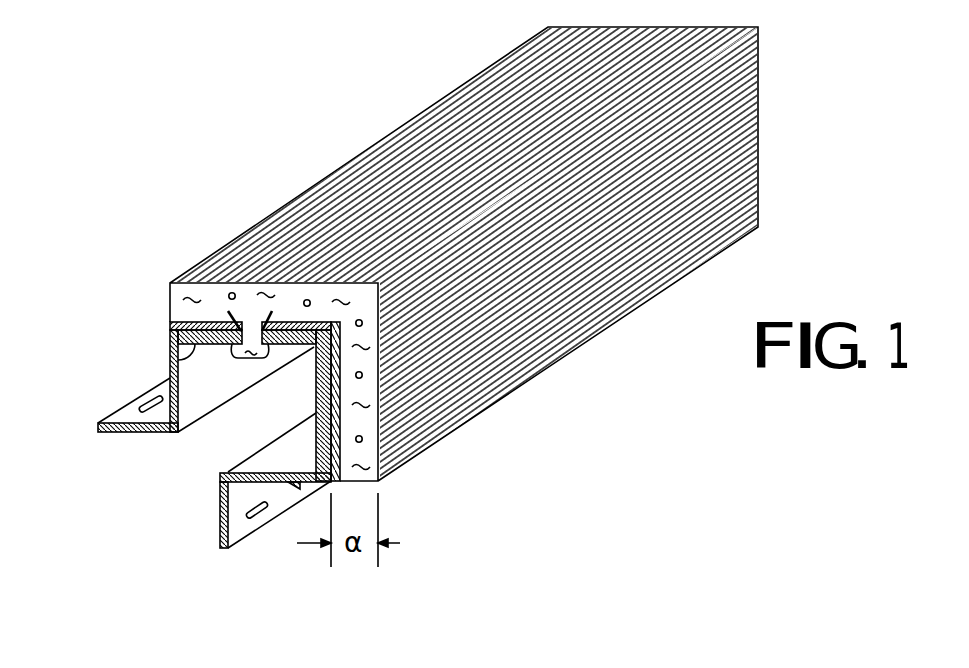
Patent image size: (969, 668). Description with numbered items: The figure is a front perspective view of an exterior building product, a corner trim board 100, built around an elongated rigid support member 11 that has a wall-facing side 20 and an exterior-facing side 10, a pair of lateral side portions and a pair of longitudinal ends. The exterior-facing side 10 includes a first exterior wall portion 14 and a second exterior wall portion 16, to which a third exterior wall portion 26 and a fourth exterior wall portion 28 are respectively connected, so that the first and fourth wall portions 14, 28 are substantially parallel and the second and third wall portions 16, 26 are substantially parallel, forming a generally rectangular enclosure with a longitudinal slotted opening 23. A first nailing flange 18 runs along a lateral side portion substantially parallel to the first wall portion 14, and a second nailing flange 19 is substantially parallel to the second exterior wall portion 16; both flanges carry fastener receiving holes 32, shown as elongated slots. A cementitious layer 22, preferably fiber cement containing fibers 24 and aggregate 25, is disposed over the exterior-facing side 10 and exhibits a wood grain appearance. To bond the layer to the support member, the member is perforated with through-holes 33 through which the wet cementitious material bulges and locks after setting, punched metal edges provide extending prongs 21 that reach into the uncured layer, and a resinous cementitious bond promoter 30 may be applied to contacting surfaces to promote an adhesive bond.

The exterior-facing side 10 is at (170, 323).
The elongated rigid support member 11 is at (313, 362).
The first exterior wall portion 14 is at (308, 325).
The second exterior wall portion 16 is at (340, 455).
The first nailing flange 18 is at (118, 414).
The second nailing flange 19 is at (232, 545).
The wall-facing side 20 is at (171, 348).
The extending prongs 21 is at (305, 300).
The cementitious layer 22 is at (367, 415).
The longitudinal slotted opening 23 is at (201, 449).
The fibers 24 is at (266, 312).
The aggregate 25 is at (229, 295).
The third exterior wall portion 26 is at (176, 358).
The fourth exterior wall portion 28 is at (283, 484).
The resinous cementitious bond promoter 30 is at (340, 365).
The fastener receiving holes 32 is at (220, 503).
The through-holes 33 is at (242, 330).
The corner trim board 100 is at (667, 382).